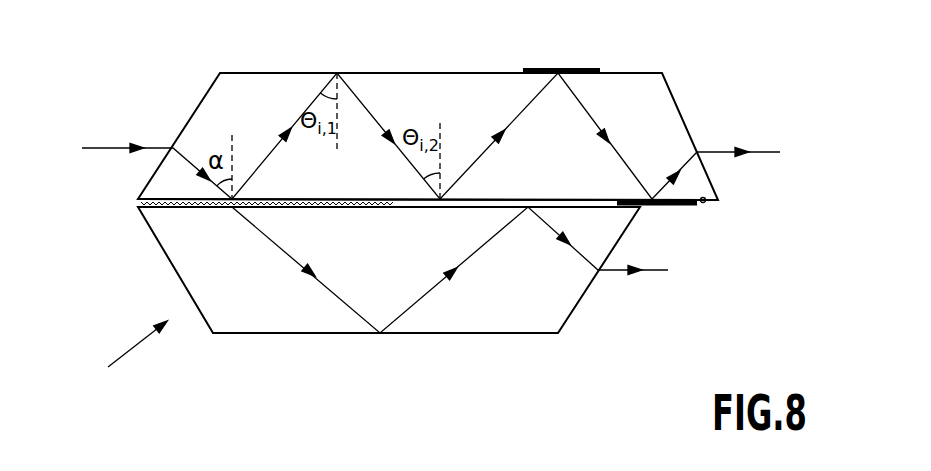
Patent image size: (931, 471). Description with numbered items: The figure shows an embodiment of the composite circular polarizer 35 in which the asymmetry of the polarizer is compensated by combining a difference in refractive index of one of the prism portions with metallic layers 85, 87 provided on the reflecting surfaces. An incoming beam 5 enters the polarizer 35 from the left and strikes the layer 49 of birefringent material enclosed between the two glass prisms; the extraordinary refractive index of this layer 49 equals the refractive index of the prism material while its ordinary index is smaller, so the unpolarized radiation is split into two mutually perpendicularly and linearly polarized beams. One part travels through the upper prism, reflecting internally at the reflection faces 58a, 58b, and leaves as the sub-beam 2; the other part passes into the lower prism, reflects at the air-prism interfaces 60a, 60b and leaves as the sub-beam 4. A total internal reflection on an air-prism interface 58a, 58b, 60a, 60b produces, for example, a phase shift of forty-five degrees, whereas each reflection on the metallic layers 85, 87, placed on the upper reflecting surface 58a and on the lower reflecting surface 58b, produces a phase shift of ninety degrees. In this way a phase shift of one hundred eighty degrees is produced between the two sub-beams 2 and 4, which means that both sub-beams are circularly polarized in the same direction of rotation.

The input light beam 5 is at (105, 147).
The sub-beam 2 is at (724, 151).
The sub-beam 4 is at (651, 272).
The composite circular polarizer 35 is at (116, 398).
The layer of birefringent material 49 is at (138, 203).
The reflection face 58a is at (655, 73).
The reflection face 58b is at (720, 203).
The air-prism interface 60a is at (518, 333).
The air-prism interface 60b is at (585, 199).
The metallic layer 85 is at (670, 207).
The metallic layer 87 is at (561, 69).